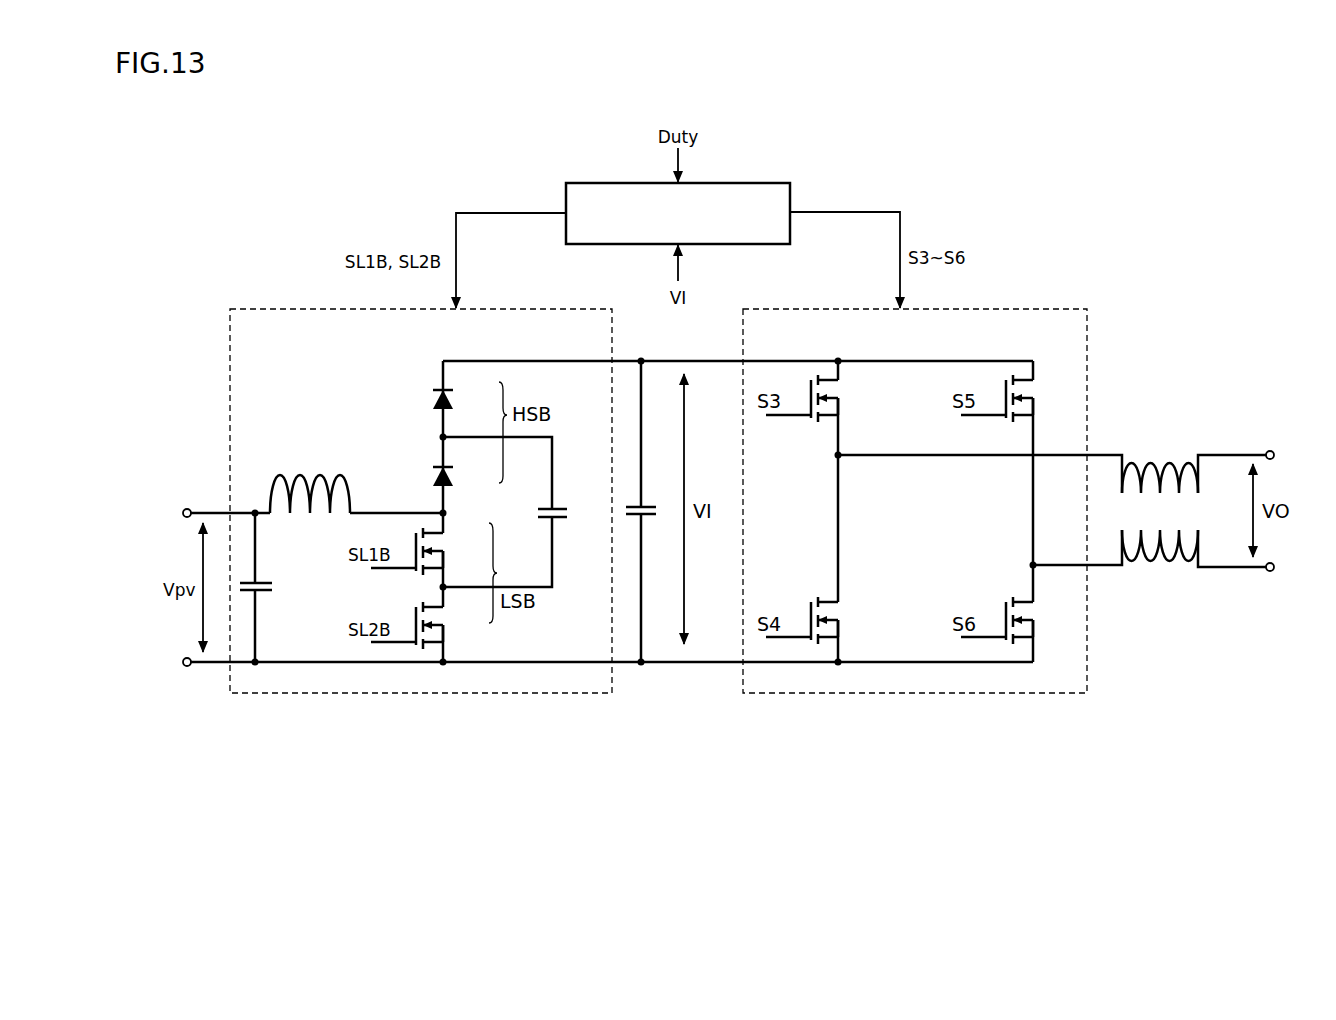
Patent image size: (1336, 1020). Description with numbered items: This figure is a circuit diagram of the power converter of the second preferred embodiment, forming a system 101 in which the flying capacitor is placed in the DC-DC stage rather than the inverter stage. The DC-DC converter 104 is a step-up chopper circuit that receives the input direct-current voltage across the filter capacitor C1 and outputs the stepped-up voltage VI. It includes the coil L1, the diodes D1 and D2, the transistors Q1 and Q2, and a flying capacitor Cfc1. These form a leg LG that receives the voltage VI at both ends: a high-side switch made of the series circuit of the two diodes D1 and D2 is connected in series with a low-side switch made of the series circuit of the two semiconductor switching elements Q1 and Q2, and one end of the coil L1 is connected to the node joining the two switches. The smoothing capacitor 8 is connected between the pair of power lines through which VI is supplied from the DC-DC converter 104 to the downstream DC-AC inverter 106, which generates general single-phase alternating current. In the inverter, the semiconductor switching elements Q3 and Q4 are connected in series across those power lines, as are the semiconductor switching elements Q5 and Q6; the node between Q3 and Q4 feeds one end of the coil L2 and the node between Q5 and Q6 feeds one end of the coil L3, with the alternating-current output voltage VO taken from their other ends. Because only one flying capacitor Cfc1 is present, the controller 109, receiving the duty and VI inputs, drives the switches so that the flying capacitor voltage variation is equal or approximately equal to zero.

The system 101 is at (1230, 208).
The DC-DC converter 104 is at (290, 309).
The DC-AC inverter 106 is at (1037, 309).
The controller 109 is at (737, 183).
The smoothing capacitor 8 is at (648, 517).
The coil L1 is at (322, 482).
The filter capacitor C1 is at (262, 596).
The diode D1 is at (455, 475).
The diode D2 is at (455, 397).
The transistor Q1 is at (445, 541).
The transistor Q2 is at (445, 617).
The semiconductor switching element Q3 is at (832, 391).
The semiconductor switching element Q4 is at (832, 613).
The semiconductor switching element Q5 is at (1026, 391).
The semiconductor switching element Q6 is at (1026, 613).
The flying capacitor Cfc1 is at (557, 520).
The coil L2 is at (1152, 496).
The coil L3 is at (1170, 530).
The leg LG is at (440, 354).